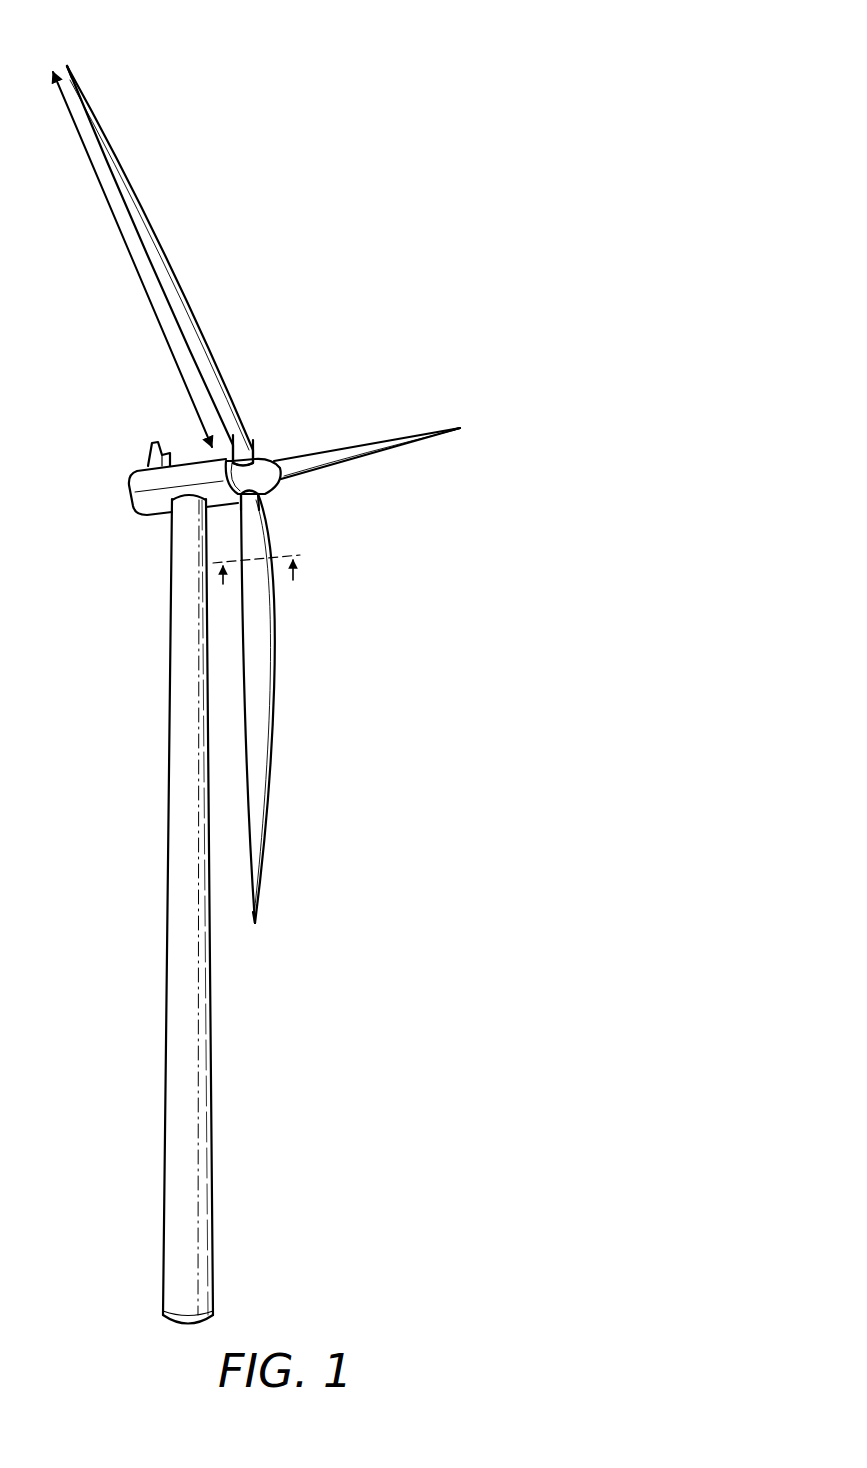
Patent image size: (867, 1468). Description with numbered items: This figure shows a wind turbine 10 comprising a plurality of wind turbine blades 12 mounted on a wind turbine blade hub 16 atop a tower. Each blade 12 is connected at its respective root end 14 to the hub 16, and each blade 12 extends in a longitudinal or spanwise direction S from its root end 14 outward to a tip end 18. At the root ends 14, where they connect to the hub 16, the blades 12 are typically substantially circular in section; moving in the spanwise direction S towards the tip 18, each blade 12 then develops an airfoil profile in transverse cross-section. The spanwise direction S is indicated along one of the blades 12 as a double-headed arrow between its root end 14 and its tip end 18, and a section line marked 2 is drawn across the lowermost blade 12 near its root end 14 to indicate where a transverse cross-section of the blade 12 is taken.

The wind turbine 10 is at (379, 151).
The wind turbine blade 12 is at (158, 248).
The root end 14 is at (295, 462).
The wind turbine blade hub 16 is at (274, 482).
The tip end 18 is at (67, 63).
The spanwise direction S is at (133, 262).
The section line 2- 2 is at (257, 585).